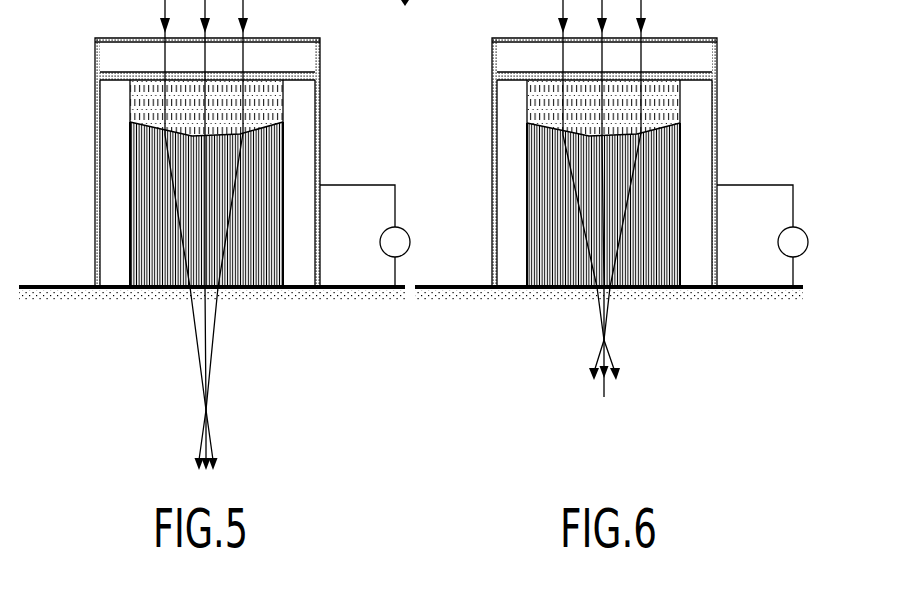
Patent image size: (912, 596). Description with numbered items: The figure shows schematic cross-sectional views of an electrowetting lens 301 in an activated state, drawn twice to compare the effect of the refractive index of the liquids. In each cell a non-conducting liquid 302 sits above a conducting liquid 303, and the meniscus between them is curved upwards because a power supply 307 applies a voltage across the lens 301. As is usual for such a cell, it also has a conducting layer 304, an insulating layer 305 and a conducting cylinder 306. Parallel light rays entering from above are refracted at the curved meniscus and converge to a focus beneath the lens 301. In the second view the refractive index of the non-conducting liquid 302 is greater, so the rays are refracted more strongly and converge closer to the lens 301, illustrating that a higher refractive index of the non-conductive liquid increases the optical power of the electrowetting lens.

In FIG. 5, the electrowetting lens 301 is at (326, 72).
In FIG. 6, the electrowetting lens 301 is at (720, 63).
In FIG. 5, the non-conducting liquid 302 is at (258, 108).
In FIG. 6, the non-conducting liquid 302 is at (650, 105).
In FIG. 5, the conducting liquid 303 is at (260, 163).
In FIG. 6, the conducting liquid 303 is at (648, 162).
In FIG. 5, the conducting layer 304 is at (353, 285).
In FIG. 6, the conducting layer 304 is at (750, 286).
In FIG. 5, the insulating layer 305 is at (97, 232).
In FIG. 6, the insulating layer 305 is at (490, 165).
In FIG. 5, the conducting cylinder 306 is at (112, 158).
In FIG. 6, the conducting cylinder 306 is at (503, 118).
In FIG. 5, the power supply 307 is at (408, 233).
In FIG. 6, the power supply 307 is at (804, 230).